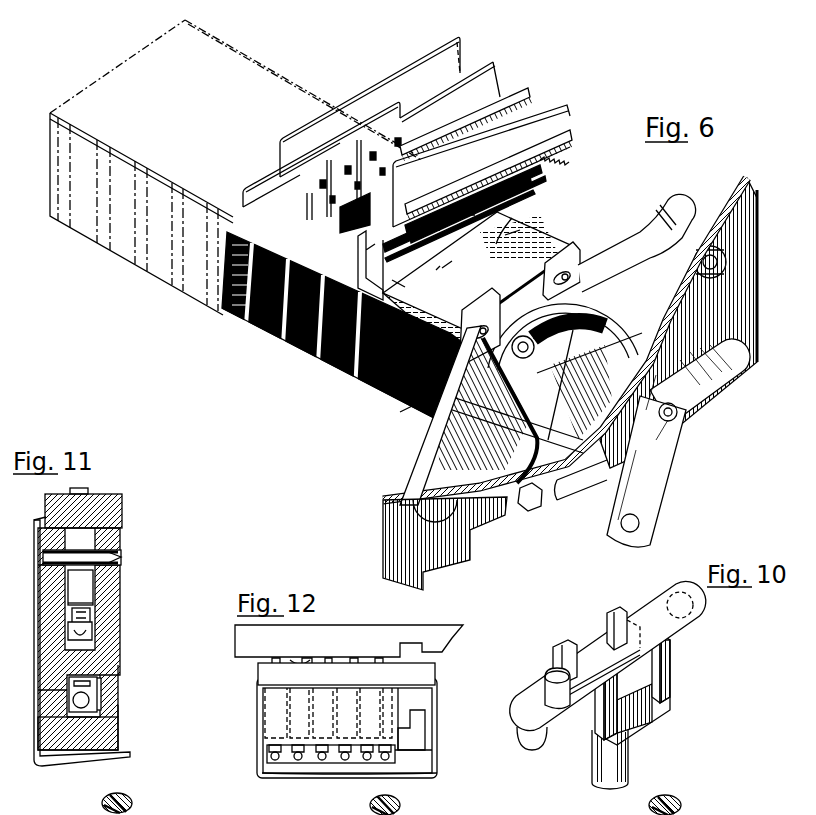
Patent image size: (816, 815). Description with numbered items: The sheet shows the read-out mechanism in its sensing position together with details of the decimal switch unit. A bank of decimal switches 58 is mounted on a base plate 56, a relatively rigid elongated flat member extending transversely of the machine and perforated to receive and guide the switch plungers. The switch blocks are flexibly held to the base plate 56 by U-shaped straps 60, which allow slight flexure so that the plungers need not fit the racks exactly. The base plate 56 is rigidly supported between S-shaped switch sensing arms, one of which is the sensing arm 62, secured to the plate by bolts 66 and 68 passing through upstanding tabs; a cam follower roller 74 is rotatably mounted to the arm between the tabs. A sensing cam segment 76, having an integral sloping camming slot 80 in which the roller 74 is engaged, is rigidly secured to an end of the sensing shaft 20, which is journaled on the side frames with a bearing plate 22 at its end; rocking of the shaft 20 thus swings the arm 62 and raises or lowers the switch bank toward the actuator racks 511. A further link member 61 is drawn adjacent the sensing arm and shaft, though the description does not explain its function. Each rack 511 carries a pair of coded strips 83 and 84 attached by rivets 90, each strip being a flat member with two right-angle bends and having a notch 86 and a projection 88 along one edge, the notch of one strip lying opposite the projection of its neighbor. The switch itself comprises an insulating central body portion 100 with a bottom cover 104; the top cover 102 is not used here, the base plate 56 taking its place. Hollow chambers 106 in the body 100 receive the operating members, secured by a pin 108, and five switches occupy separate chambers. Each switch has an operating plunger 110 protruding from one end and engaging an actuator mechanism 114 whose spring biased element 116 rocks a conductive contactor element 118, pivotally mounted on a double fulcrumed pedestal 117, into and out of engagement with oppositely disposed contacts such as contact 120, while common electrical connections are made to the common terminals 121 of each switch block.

In FIG. 6, the sensing shaft 20 is at (588, 503).
In FIG. 6, the bearing plate 22 is at (540, 505).
In FIG. 6, the base plate 56 is at (533, 235).
In FIG. 12, the base plate 56 is at (415, 678).
In FIG. 6, the bank of decimal switches 58 is at (236, 326).
In FIG. 6, the straps 60 is at (362, 390).
In FIG. 11, the straps 60 is at (125, 752).
In FIG. 12, the straps 60 is at (285, 780).
In FIG. 6, the link 61 is at (658, 468).
In FIG. 6, the switch sensing arm 62 is at (438, 463).
In FIG. 6, the bolt 66 is at (500, 306).
In FIG. 6, the bolt 68 is at (578, 272).
In FIG. 6, the cam follower roller 74 is at (528, 358).
In FIG. 6, the sensing cam segment 76 is at (540, 416).
In FIG. 6, the camming slot 80 is at (605, 338).
In FIG. 6, the coded strip 83 is at (395, 278).
In FIG. 6, the coded strip 84 is at (366, 262).
In FIG. 6, the notch 86 is at (500, 242).
In FIG. 6, the projection 88 is at (432, 268).
In FIG. 6, the rivets 90 is at (530, 175).
In FIG. 11, the insulating central body portion 100 is at (120, 664).
In FIG. 12, the insulating central body portion 100 is at (262, 706).
In FIG. 11, the top cover 102 is at (122, 512).
In FIG. 11, the bottom cover 104 is at (118, 717).
In FIG. 12, the hollow recesses or chambers 106 is at (277, 717).
In FIG. 11, the pin 108 is at (121, 557).
In FIG. 11, the operating plunger or rod 110 is at (88, 490).
In FIG. 11, the actuator mechanism 114 is at (85, 592).
In FIG. 11, the spring biased element 116 is at (90, 614).
In FIG. 10, the spring biased element 116 is at (546, 685).
In FIG. 10, the double fulcrumed pedestal 117 is at (672, 692).
In FIG. 11, the conductive contactor element 118 is at (70, 630).
In FIG. 10, the conductive contactor element 118 is at (675, 630).
In FIG. 11, the contact 120 is at (84, 698).
In FIG. 11, the common terminal 121 is at (100, 680).
In FIG. 11, the actuator rack 511 is at (140, 808).
In FIG. 12, the actuator rack 511 is at (408, 808).
In FIG. 10, the actuator rack 511 is at (683, 808).